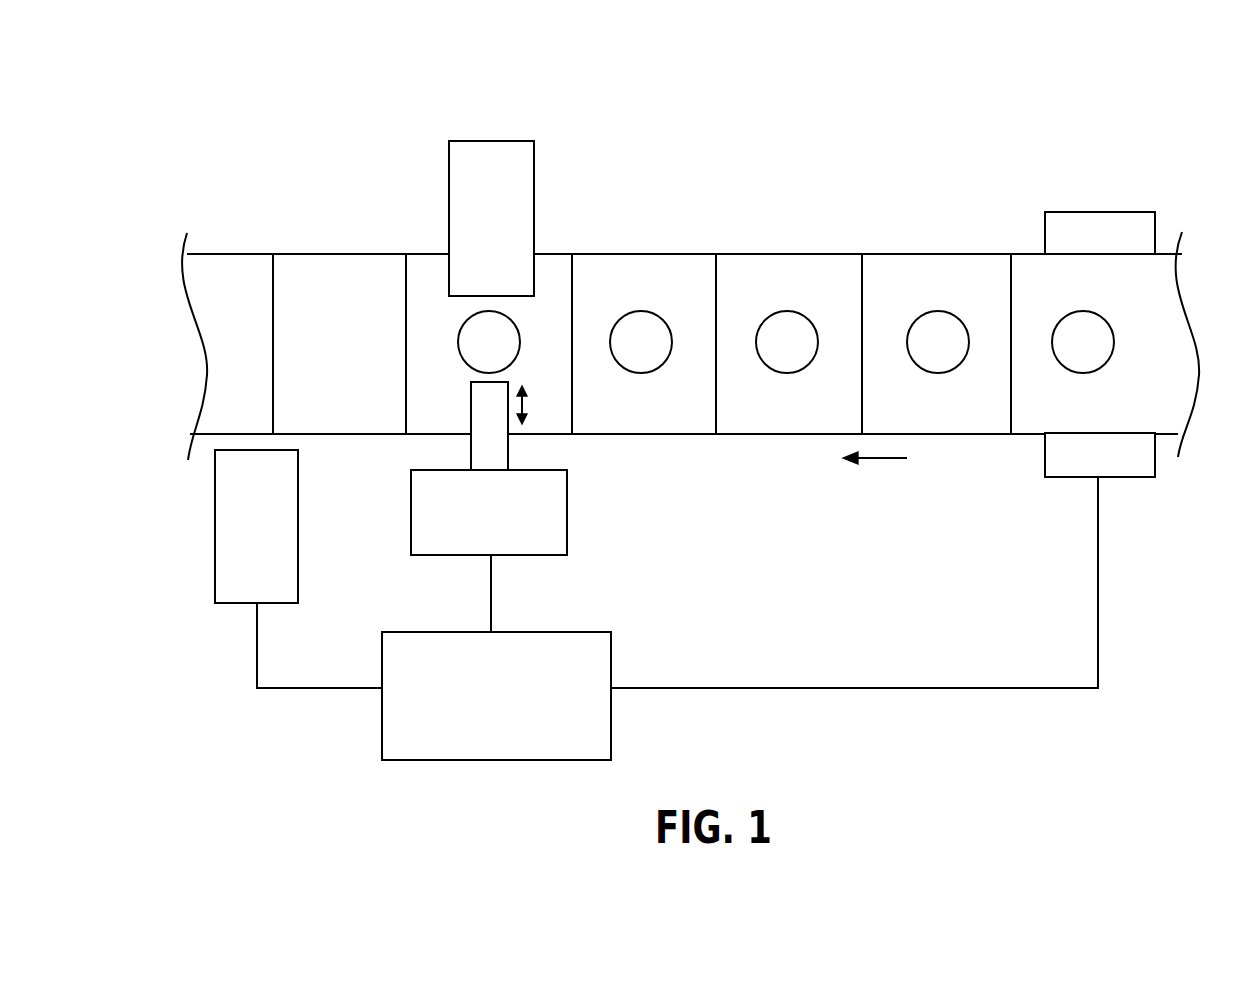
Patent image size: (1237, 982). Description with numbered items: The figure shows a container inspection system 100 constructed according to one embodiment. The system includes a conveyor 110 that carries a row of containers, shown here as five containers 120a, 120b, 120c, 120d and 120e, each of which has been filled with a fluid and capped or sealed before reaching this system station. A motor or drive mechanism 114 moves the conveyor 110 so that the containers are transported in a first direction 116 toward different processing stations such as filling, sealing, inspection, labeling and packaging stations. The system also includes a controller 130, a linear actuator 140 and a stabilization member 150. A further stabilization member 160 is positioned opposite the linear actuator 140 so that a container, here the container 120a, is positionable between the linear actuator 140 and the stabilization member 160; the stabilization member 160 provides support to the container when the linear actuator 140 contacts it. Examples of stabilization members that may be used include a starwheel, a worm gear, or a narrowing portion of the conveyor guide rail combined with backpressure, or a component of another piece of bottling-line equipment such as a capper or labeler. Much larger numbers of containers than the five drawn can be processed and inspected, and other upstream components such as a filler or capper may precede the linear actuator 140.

The container inspection system 100 is at (953, 93).
The conveyor 110 is at (765, 253).
The motor 114 is at (1098, 212).
The first direction 116 is at (876, 471).
The container 120a is at (489, 342).
The container 120b is at (641, 342).
The container 120c is at (787, 342).
The container 120d is at (938, 342).
The container 120e is at (1083, 342).
The controller 130 is at (613, 653).
The linear actuator 140 is at (572, 506).
The stabilization member 150 is at (232, 603).
The stabilization member 160 is at (535, 167).